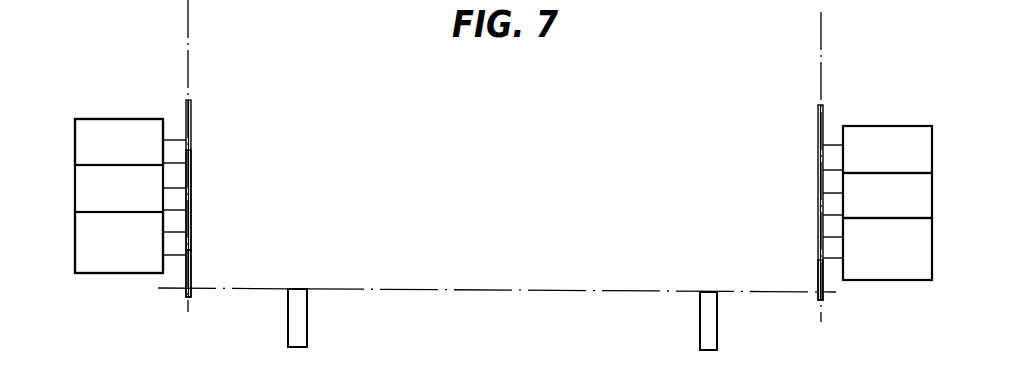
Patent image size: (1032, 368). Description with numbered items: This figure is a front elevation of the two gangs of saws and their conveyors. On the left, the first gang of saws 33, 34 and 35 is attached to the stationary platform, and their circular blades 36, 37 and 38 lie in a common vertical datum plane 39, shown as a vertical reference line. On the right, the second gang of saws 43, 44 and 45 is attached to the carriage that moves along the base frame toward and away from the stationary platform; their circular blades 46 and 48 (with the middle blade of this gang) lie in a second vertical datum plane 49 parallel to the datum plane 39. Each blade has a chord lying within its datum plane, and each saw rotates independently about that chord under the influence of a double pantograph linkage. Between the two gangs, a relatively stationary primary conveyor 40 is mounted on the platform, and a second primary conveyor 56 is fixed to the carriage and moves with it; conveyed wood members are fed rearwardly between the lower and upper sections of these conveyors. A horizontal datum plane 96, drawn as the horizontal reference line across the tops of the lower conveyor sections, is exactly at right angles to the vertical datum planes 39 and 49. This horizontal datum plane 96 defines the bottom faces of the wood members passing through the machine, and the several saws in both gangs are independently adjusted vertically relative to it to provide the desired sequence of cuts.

The saw 33 is at (90, 194).
The saw 34 is at (124, 255).
The saw 35 is at (124, 133).
The circular blade 36 is at (191, 217).
The circular blade 37 is at (191, 278).
The circular blade 38 is at (191, 118).
The vertical datum plane 39 is at (189, 44).
The primary conveyor 40 is at (308, 325).
The saw 43 is at (890, 148).
The saw 44 is at (912, 204).
The saw 45 is at (896, 258).
The circular blade 46 is at (818, 118).
The circular blade 48 is at (818, 279).
The vertical datum plane 49 is at (821, 68).
The primary conveyor 56 is at (698, 322).
The horizontal datum plane 96 is at (507, 289).